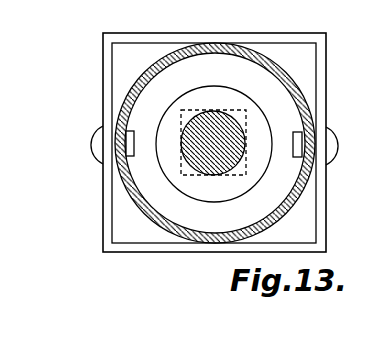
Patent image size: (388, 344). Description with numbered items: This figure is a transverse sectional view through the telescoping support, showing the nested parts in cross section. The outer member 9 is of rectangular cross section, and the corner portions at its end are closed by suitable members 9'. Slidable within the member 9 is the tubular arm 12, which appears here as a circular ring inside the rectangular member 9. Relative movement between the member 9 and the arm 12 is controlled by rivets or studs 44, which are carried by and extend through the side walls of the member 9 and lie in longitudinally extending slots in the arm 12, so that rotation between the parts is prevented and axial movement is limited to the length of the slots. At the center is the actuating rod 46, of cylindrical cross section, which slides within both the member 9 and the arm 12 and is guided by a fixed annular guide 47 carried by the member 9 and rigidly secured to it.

The member 9 is at (214, 129).
The members closing the corner portions 9' is at (234, 145).
The tubular arm 12 is at (300, 82).
The rivets or studs 44 is at (100, 157).
The actuating rod 46 is at (192, 171).
The fixed annular guide 47 is at (140, 174).